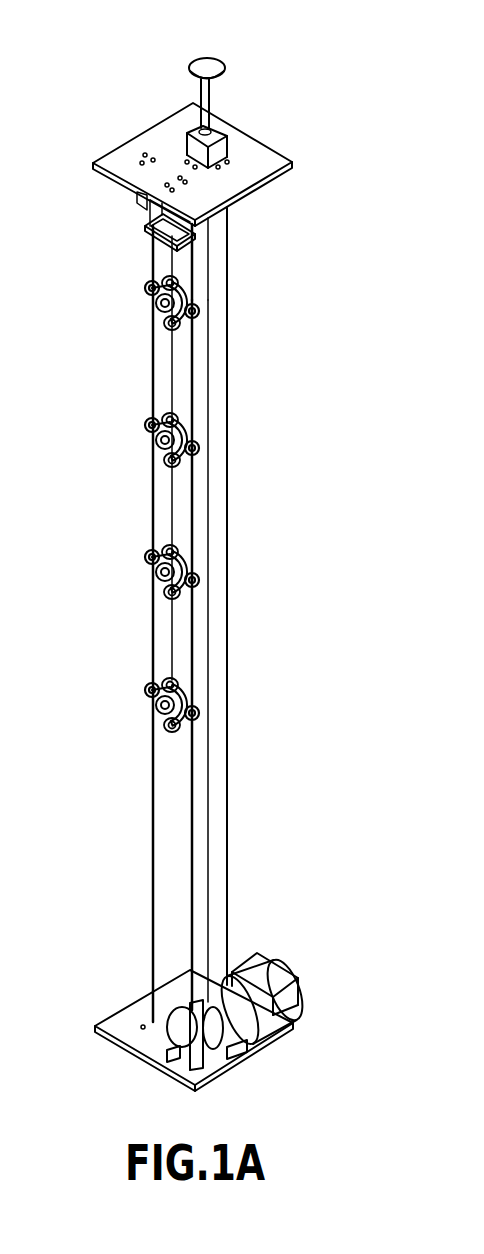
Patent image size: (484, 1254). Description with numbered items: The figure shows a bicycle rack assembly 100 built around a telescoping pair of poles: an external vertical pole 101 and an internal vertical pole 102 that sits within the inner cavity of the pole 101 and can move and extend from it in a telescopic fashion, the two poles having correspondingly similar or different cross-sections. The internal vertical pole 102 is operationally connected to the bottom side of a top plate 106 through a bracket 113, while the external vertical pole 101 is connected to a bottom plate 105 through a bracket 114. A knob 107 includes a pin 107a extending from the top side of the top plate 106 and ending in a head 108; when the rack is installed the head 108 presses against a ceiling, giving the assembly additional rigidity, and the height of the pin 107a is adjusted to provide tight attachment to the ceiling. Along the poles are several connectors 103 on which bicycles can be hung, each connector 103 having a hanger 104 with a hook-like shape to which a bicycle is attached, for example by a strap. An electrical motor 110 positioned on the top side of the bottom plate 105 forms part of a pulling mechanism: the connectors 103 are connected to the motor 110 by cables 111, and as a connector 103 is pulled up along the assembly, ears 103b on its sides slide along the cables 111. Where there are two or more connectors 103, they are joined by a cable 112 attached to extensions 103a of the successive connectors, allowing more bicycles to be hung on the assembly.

The rack and pinion lift assembly 100 is at (362, 312).
The external vertical pole 101 is at (228, 342).
The internal vertical pole 102 is at (226, 216).
The connector 103 is at (188, 563).
The extensions 103a is at (176, 680).
The ears 103b is at (152, 690).
The hanger 104 is at (157, 714).
The bottom plate 105 is at (132, 1017).
The top plate 106 is at (263, 160).
The knob 107 is at (211, 90).
The pin 107a is at (211, 101).
The head 108 is at (212, 60).
The electrical motor 110 is at (287, 967).
The cables 111 is at (192, 357).
The cable 112 is at (172, 372).
The bracket 113 is at (146, 226).
The bracket 114 is at (162, 1027).